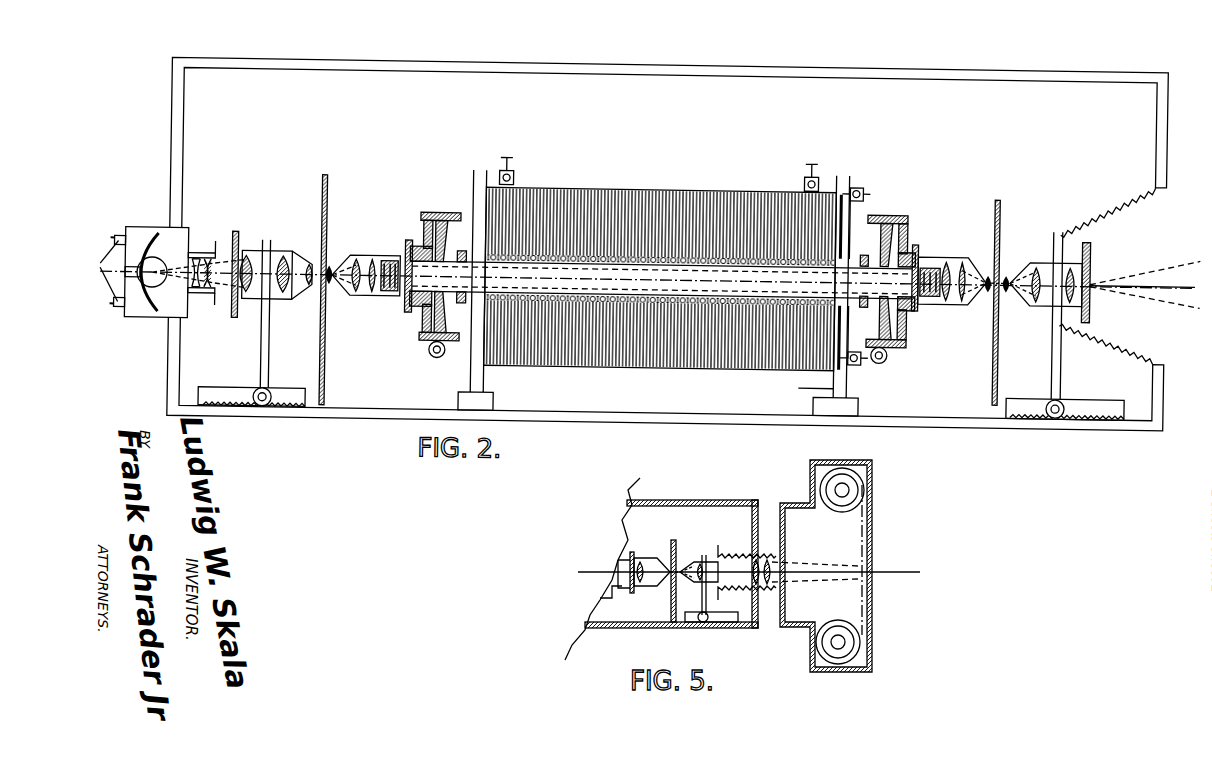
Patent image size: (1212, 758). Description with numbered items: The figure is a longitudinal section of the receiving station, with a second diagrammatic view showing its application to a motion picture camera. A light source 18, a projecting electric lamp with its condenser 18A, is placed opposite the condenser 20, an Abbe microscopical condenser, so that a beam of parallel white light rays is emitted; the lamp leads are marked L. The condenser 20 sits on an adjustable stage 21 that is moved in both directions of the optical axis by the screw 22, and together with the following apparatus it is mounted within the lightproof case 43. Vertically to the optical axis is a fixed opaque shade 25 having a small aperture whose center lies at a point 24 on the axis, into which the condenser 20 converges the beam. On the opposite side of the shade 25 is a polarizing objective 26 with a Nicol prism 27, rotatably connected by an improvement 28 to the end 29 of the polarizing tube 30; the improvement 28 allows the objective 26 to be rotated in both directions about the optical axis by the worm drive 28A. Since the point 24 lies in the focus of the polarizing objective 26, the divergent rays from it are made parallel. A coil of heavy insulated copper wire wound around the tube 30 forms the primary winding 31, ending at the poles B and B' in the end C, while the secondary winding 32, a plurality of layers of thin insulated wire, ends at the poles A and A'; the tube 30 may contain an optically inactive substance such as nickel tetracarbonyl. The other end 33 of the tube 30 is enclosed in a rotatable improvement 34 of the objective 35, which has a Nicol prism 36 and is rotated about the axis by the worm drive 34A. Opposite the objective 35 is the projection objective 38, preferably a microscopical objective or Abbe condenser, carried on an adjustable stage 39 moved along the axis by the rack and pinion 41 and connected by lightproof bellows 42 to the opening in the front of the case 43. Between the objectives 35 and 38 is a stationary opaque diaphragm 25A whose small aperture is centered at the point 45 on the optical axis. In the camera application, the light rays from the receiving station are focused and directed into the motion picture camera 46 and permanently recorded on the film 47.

In FIG. 2, the light source 18 is at (140, 235).
In FIG. 2, the condenser 18A is at (198, 261).
In FIG. 2, the condenser 20 is at (280, 260).
In FIG. 2, the adjustable stage 21 is at (260, 361).
In FIG. 2, the screw 22 is at (257, 414).
In FIG. 2, the point on the optical axis 24 is at (312, 292).
In FIG. 2, the fixed opaque shade 25 is at (326, 187).
In FIG. 2, the stationary opaque shade or diaphragm 25A is at (996, 196).
In FIG. 2, the polarizing objective 26 is at (356, 262).
In FIG. 2, the Nicol prism 27 is at (383, 300).
In FIG. 2, the improvement 28 is at (422, 238).
In FIG. 2, the worm drive 28A is at (430, 356).
In FIG. 2, the end of the polarizing tube 29 is at (466, 214).
In FIG. 2, the polarizing tube 30 is at (620, 278).
In FIG. 2, the primary winding 31 is at (665, 262).
In FIG. 2, the secondary winding 32 is at (747, 208).
In FIG. 2, the end of the polarizing tubing 33 is at (868, 224).
In FIG. 2, the rotatable improvement 34 is at (898, 238).
In FIG. 2, the worm drive 34A is at (888, 358).
In FIG. 2, the objective 35 is at (950, 255).
In FIG. 5, the objective 35 is at (648, 555).
In FIG. 2, the Nicol prism 36 is at (932, 295).
In FIG. 2, the projection objective 38 is at (1028, 264).
In FIG. 5, the projection objective 38 is at (690, 560).
In FIG. 2, the adjustable stage 39 is at (1053, 349).
In FIG. 5, the adjustable stage 39 is at (703, 594).
In FIG. 2, the rack and pinion 41 is at (1052, 416).
In FIG. 5, the rack and pinion 41 is at (704, 621).
In FIG. 2, the lightproof bellows 42 is at (1115, 338).
In FIG. 5, the lightproof bellows 42 is at (746, 544).
In FIG. 2, the lightproof case 43 is at (292, 68).
In FIG. 5, the lightproof case 43 is at (697, 500).
In FIG. 2, the point on the optical axis 45 is at (1000, 288).
In FIG. 5, the motion picture camera 46 is at (800, 510).
In FIG. 5, the film 47 is at (868, 536).
In FIG. 2, the pole A is at (512, 155).
In FIG. 2, the pole A' is at (798, 164).
In FIG. 2, the pole B is at (864, 209).
In FIG. 2, the pole B' is at (862, 351).
In FIG. 2, the end C is at (807, 387).
In FIG. 2, the lamp leads L is at (99, 271).